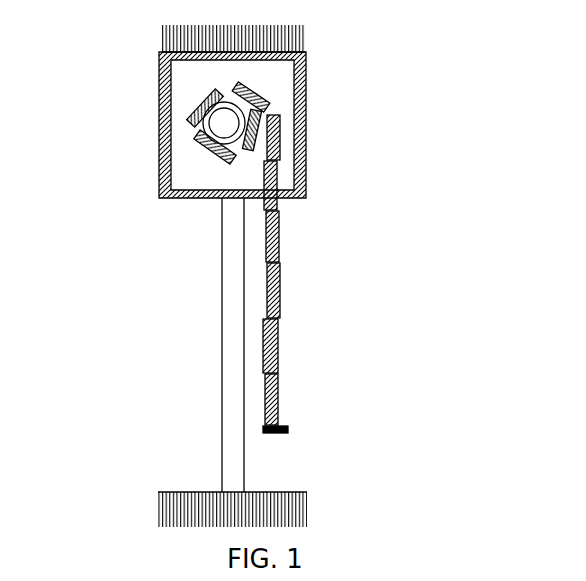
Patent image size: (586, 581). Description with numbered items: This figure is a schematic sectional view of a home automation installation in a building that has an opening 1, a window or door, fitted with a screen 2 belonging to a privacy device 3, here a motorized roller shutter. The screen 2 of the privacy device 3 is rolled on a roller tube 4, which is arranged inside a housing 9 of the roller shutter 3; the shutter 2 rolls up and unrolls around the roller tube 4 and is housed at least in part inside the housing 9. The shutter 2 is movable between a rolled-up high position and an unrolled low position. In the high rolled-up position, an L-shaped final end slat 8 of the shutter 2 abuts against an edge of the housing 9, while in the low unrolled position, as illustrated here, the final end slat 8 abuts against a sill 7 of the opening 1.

The opening 1 is at (201, 361).
The screen 2 is at (277, 245).
The privacy device 3 is at (365, 274).
The roller tube 4 is at (208, 130).
The sill 7 is at (196, 482).
The final end slat 8 is at (278, 397).
The housing 9 is at (162, 85).